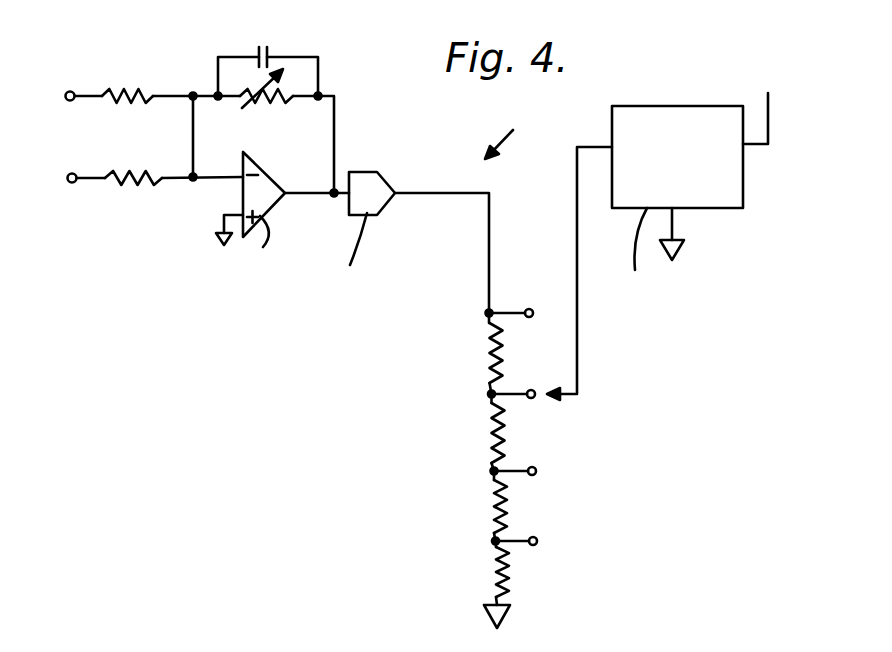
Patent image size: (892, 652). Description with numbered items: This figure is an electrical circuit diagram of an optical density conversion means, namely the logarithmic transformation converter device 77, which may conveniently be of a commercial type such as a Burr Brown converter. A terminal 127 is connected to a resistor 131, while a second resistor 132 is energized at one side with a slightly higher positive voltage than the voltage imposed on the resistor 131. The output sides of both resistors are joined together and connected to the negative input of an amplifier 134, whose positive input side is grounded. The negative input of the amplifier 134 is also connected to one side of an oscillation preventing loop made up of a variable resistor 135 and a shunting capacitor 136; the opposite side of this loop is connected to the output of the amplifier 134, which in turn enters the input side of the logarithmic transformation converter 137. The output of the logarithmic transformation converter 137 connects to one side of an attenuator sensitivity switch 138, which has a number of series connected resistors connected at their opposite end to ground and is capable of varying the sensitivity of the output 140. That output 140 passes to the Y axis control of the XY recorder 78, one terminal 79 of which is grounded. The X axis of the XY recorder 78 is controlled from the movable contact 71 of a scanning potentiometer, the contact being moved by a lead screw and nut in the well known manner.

The terminal 127 is at (60, 113).
The resistor 131 is at (135, 76).
The resistor 132 is at (115, 160).
The amplifier 134 is at (266, 200).
The variable resistor 135 is at (253, 100).
The shunting capacitor 136 is at (273, 59).
The logarithmic transformation converter 137 is at (402, 226).
The logarithmic transformation converter device 77 is at (514, 132).
The XY recorder 78 is at (675, 185).
The movable contact 71 is at (777, 118).
The terminal 79 is at (697, 234).
The output 140 is at (579, 260).
The attenuator sensitivity switch 138 is at (545, 468).